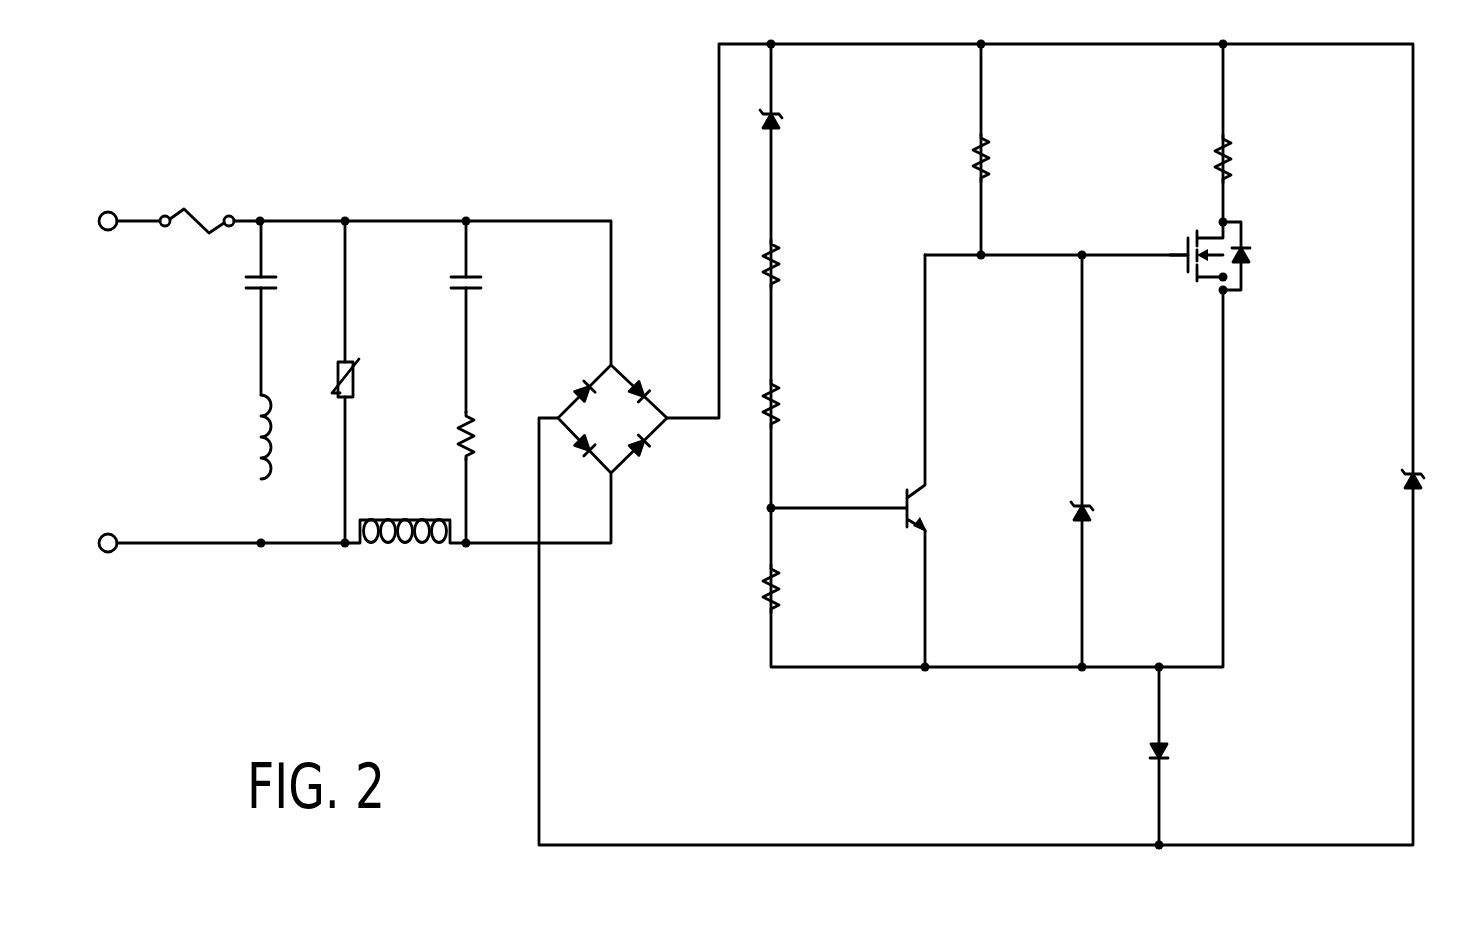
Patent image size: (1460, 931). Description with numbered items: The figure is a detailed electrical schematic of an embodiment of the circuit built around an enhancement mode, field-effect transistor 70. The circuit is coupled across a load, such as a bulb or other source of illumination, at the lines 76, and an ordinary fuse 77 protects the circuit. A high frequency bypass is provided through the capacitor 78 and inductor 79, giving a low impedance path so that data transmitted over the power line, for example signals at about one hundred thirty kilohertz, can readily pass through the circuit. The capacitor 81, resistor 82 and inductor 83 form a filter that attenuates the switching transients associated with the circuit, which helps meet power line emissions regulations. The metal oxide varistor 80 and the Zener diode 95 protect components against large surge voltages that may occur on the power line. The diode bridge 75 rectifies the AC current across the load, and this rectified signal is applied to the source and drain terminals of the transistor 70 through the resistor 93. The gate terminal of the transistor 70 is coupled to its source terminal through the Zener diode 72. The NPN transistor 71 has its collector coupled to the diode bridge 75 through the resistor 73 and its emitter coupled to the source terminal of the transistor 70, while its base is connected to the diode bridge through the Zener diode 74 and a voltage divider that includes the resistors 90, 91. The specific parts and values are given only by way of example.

The enhancement mode field-effect transistor 70 is at (1258, 260).
The NPN transistor 71 is at (935, 513).
The Zener diode 72 is at (1095, 513).
The resistor 73 is at (993, 162).
The Zener diode 74 is at (787, 120).
The diode bridge 75 is at (610, 408).
The lines 76 is at (108, 240).
The fuse 77 is at (203, 214).
The capacitor 78 is at (280, 285).
The inductor 79 is at (280, 433).
The metal oxide varistor 80 is at (362, 377).
The capacitor 81 is at (487, 282).
The resistor 82 is at (487, 433).
The inductor 83 is at (402, 552).
The resistor 90 is at (787, 264).
The resistor 91 is at (787, 407).
The resistor 93 is at (1237, 162).
The Zener diode 95 is at (1422, 485).